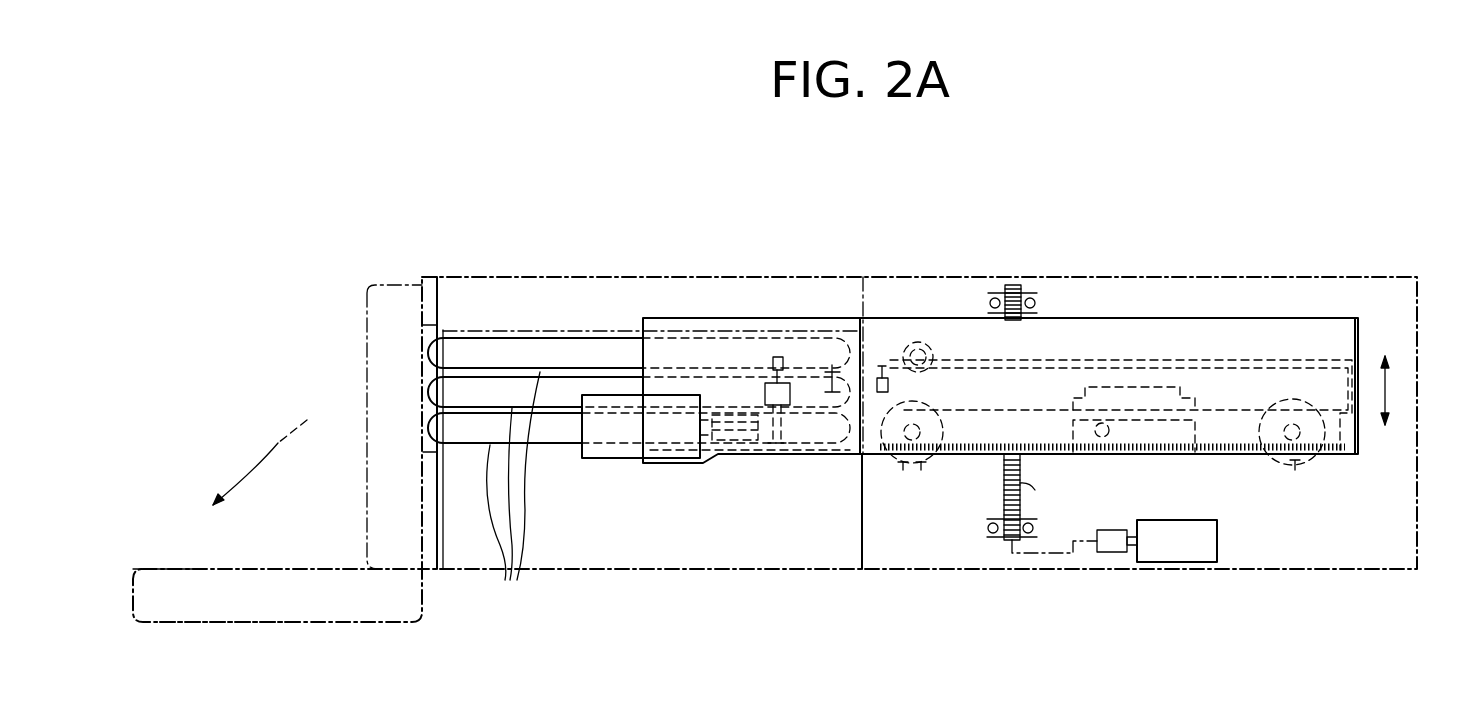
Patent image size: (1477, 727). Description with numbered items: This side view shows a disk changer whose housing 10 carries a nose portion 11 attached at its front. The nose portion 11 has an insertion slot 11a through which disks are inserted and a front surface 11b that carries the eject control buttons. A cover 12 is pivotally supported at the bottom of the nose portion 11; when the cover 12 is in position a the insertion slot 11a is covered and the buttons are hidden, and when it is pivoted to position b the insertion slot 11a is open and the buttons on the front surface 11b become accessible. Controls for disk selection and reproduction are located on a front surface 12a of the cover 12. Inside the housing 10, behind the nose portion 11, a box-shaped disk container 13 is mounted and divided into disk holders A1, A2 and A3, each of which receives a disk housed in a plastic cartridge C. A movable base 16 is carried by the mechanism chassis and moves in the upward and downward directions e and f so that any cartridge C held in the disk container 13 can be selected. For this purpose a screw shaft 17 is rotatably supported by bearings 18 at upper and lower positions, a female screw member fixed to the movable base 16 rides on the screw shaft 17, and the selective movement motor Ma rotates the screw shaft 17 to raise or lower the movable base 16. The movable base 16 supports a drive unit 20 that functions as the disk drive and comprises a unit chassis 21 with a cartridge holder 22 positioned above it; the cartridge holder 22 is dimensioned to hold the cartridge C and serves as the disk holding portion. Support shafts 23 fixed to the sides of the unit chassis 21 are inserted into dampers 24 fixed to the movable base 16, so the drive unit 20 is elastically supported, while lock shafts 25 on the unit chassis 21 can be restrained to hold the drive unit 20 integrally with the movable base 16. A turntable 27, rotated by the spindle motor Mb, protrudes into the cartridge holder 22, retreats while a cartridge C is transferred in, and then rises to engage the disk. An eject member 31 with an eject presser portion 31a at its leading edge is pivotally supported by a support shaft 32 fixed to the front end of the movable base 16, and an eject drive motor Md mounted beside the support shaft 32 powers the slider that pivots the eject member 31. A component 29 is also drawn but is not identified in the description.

The housing 10 is at (750, 277).
The nose portion 11 is at (440, 300).
The insertion slot 11a is at (427, 335).
The front surface 11b is at (423, 492).
The cover 12 is at (330, 605).
The front surface 12a is at (233, 623).
The disk container 13 is at (862, 517).
The movable base 16 is at (818, 458).
The screw shaft 17 is at (1020, 483).
The bearings 18 is at (1022, 290).
The drive unit 20 is at (1257, 360).
The unit chassis 21 is at (970, 463).
The cartridge holder 22 is at (1135, 360).
The support shafts 23 is at (921, 462).
The dampers 24 is at (903, 465).
The lock shafts 25 is at (1105, 452).
The turntable 27 is at (1182, 385).
The idler roller 29 is at (926, 345).
The eject member 31 is at (828, 362).
The eject presser portion 31a is at (880, 362).
The support shaft 32 is at (775, 443).
The disk holder A1 is at (425, 353).
The disk holder A2 is at (425, 392).
The disk holder A3 is at (425, 428).
The cartridge C is at (513, 497).
The selective movement motor Ma is at (1192, 557).
The spindle motor Mb is at (1220, 447).
The eject drive motor Md is at (610, 460).
The cover position a is at (367, 293).
The cover position b is at (200, 567).
The upward direction e is at (1384, 375).
The downward direction f is at (1385, 435).